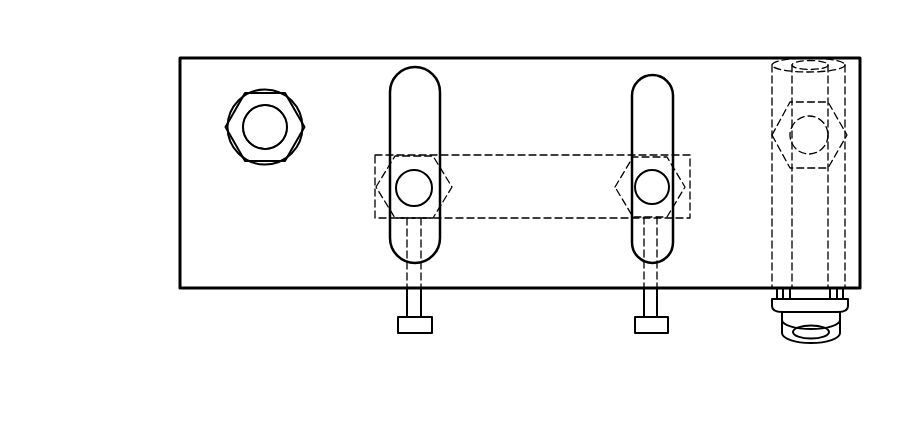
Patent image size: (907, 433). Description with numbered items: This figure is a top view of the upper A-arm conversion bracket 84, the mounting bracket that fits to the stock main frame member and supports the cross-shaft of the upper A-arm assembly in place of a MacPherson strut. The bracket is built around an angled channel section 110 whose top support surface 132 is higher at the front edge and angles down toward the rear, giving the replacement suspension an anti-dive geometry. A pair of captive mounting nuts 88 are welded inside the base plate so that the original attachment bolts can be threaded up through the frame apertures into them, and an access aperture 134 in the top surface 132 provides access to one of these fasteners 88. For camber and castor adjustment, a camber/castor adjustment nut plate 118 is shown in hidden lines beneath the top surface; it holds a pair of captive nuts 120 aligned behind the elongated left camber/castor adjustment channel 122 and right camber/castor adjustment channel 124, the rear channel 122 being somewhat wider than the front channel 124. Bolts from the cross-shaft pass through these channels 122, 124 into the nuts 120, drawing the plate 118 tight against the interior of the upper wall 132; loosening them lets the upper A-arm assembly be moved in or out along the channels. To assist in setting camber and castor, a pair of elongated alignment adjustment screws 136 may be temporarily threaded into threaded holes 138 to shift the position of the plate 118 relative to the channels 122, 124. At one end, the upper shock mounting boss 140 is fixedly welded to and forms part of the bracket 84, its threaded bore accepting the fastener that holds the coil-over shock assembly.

The upper A-arm conversion bracket 84 is at (163, 80).
The angled channel section 110 is at (526, 58).
The captive mounting nut 88 is at (292, 110).
The access aperture 134 is at (258, 165).
The top support surface 132 is at (290, 254).
The camber/castor adjustment nut plate 118 is at (538, 155).
The captive nut 120 is at (380, 166).
The left camber/castor adjustment channel 122 is at (433, 250).
The right camber/castor adjustment channel 124 is at (673, 100).
The threaded hole 138 is at (407, 284).
The alignment adjustment screw 136 is at (407, 308).
The upper shock mounting boss 140 is at (843, 322).